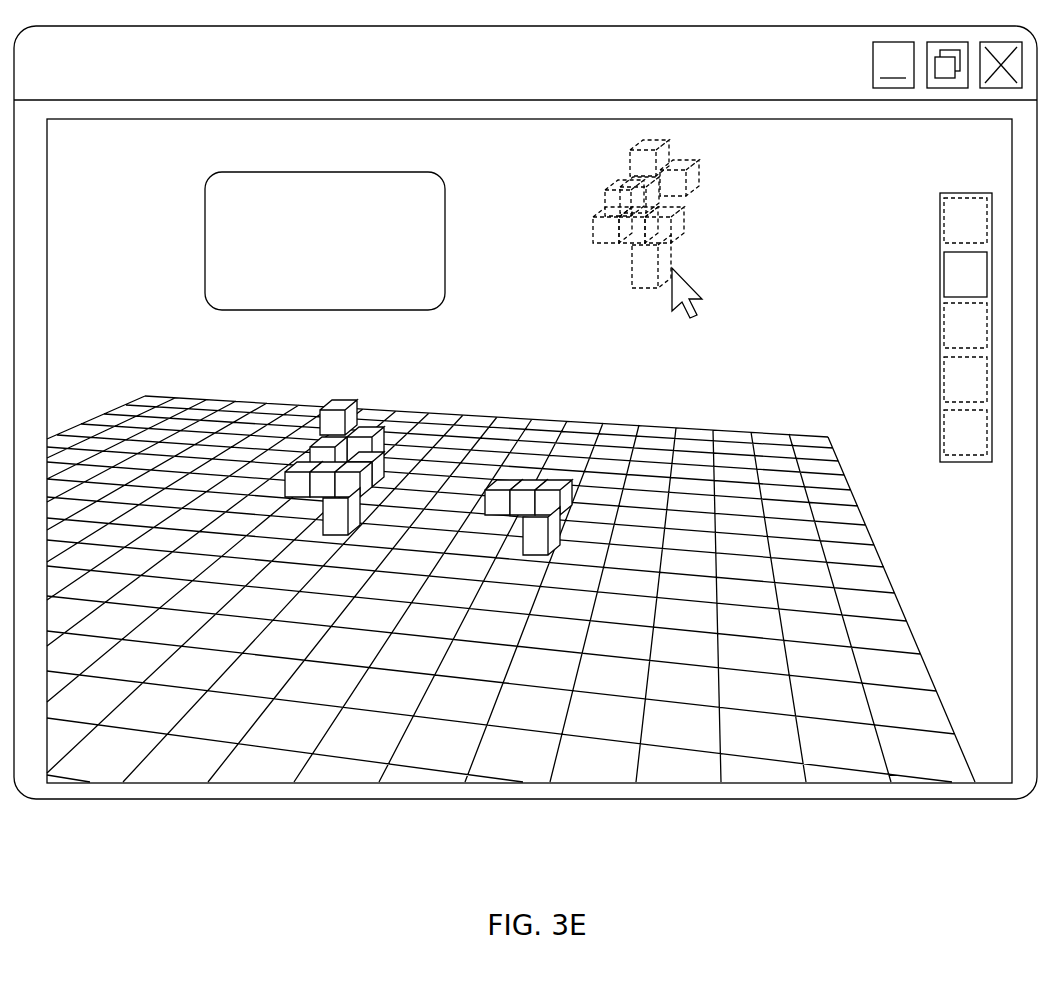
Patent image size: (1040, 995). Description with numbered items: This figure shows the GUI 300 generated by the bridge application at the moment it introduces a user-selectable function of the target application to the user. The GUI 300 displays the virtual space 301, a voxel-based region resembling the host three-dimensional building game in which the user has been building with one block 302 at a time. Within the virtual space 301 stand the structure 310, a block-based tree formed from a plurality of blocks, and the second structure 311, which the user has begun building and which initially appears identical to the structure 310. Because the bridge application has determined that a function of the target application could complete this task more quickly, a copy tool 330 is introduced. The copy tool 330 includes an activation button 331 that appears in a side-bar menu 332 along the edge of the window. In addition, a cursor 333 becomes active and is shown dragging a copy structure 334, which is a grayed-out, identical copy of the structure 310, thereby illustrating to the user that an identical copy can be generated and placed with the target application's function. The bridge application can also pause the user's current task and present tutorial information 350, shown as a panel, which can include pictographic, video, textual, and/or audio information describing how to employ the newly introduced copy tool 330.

The graphical user interface 300 is at (525, 412).
The virtual space 301 is at (180, 243).
The block 302 is at (300, 520).
The structure 310 is at (378, 405).
The second structure 311 is at (553, 478).
The copy tool 330 is at (624, 228).
The activation button 331 is at (940, 277).
The side-bar menu 332 is at (940, 380).
The cursor 333 is at (680, 277).
The copy structure 334 is at (690, 175).
The tutorial information 350 is at (325, 241).